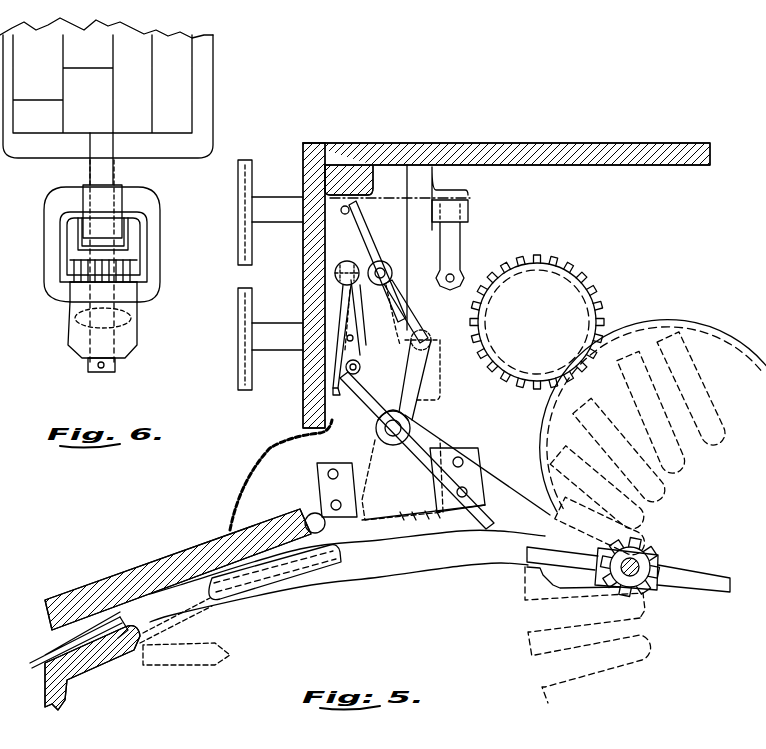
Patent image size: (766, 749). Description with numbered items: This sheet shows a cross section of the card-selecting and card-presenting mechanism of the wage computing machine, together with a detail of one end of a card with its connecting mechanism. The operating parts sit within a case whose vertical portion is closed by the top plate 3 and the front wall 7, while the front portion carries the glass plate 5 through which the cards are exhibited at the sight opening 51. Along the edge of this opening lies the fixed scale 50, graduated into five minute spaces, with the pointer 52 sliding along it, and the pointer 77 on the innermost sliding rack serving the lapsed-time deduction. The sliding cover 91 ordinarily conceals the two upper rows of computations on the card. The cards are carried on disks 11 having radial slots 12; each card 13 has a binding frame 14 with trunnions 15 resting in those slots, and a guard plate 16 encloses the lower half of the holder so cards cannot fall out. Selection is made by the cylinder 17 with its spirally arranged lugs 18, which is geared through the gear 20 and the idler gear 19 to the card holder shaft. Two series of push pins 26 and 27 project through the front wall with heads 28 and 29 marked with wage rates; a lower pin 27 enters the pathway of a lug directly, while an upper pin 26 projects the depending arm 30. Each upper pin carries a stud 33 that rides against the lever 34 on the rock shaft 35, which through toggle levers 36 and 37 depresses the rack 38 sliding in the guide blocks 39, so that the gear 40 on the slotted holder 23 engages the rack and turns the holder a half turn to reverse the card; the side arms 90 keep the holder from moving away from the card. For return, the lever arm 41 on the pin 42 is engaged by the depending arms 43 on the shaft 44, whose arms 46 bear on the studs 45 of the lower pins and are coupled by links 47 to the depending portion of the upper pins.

In FIG. 5, the top plate 3 is at (546, 143).
In FIG. 5, the glass plate 5 is at (152, 560).
In FIG. 5, the front wall 7 is at (303, 246).
In FIG. 5, the disks 11 is at (535, 652).
In FIG. 5, the slots 12 is at (626, 517).
In FIG. 6, the card 13 is at (102, 84).
In FIG. 6, the binding frame 14 is at (208, 112).
In FIG. 5, the binding frame 14 is at (715, 578).
In FIG. 6, the trunnions 15 is at (86, 170).
In FIG. 5, the guard plate 16 is at (347, 576).
In FIG. 5, the cylinder 17 is at (553, 288).
In FIG. 5, the lugs 18 is at (536, 250).
In FIG. 5, the idler gear 19 is at (640, 322).
In FIG. 5, the gear 20 is at (603, 290).
In FIG. 6, the slotted holder 23 is at (130, 246).
In FIG. 5, the push pins 26 is at (274, 200).
In FIG. 5, the push pins 27 is at (268, 342).
In FIG. 5, the heads 28 is at (238, 216).
In FIG. 5, the heads 29 is at (238, 351).
In FIG. 5, the depending arm 30 is at (455, 252).
In FIG. 5, the stud 33 is at (345, 214).
In FIG. 5, the lever 34 is at (374, 225).
In FIG. 5, the rock shaft 35 is at (378, 284).
In FIG. 5, the toggle lever 36 is at (420, 316).
In FIG. 5, the toggle lever 37 is at (415, 372).
In FIG. 5, the rack 38 is at (408, 462).
In FIG. 5, the guide blocks 39 is at (348, 468).
In FIG. 6, the gear 40 is at (138, 266).
In FIG. 5, the gear 40 is at (652, 552).
In FIG. 5, the lever arm 41 is at (455, 455).
In FIG. 5, the pin 42 is at (378, 424).
In FIG. 5, the depending arms 43 is at (340, 318).
In FIG. 5, the shaft 44 is at (347, 263).
In FIG. 5, the stud 45 is at (320, 363).
In FIG. 5, the arm 46 is at (325, 278).
In FIG. 5, the links 47 is at (420, 283).
In FIG. 5, the fixed scale 50 is at (110, 657).
In FIG. 5, the sight opening 51 is at (240, 605).
In FIG. 5, the pointer 52 is at (97, 627).
In FIG. 5, the pointer 77 is at (133, 652).
In FIG. 6, the side arms 90 is at (160, 214).
In FIG. 5, the sliding cover 91 is at (246, 478).